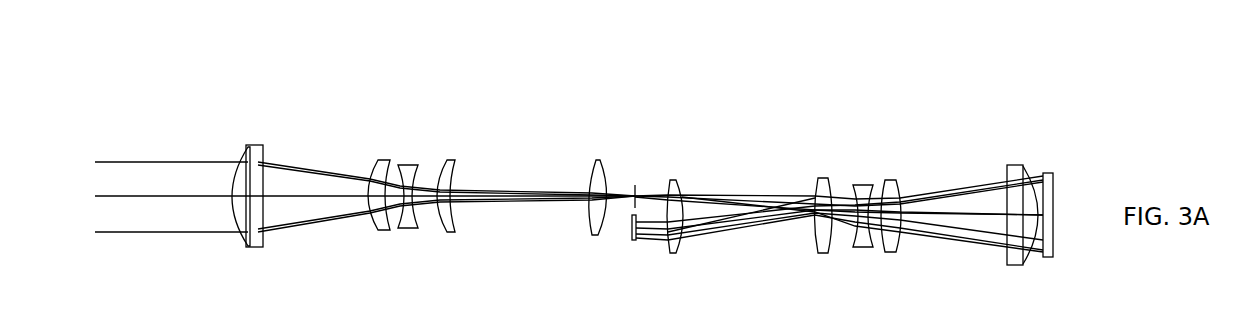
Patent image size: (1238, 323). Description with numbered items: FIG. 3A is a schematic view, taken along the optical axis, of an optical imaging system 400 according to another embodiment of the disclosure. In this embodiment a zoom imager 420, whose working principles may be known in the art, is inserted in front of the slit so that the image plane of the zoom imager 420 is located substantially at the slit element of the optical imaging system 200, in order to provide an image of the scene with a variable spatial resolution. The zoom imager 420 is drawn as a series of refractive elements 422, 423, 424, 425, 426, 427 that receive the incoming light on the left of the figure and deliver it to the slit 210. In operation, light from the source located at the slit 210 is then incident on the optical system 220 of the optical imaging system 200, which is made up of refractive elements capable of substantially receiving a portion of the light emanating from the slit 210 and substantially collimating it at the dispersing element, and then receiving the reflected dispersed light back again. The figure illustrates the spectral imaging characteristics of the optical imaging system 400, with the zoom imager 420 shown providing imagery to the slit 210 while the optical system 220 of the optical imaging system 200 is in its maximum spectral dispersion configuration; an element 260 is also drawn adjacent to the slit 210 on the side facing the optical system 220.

The optical imaging system 400 is at (193, 83).
The zoom imager 420 is at (607, 233).
The first lens 422 is at (245, 152).
The lens plate 423 is at (262, 152).
The second lens 424 is at (376, 160).
The third lens 425 is at (416, 165).
The fourth lens 426 is at (457, 162).
The fifth lens 427 is at (594, 160).
The slit element 210 is at (634, 190).
The light source 260 is at (630, 225).
The optical imaging system 200 is at (1057, 263).
The optical system 220 is at (1040, 165).